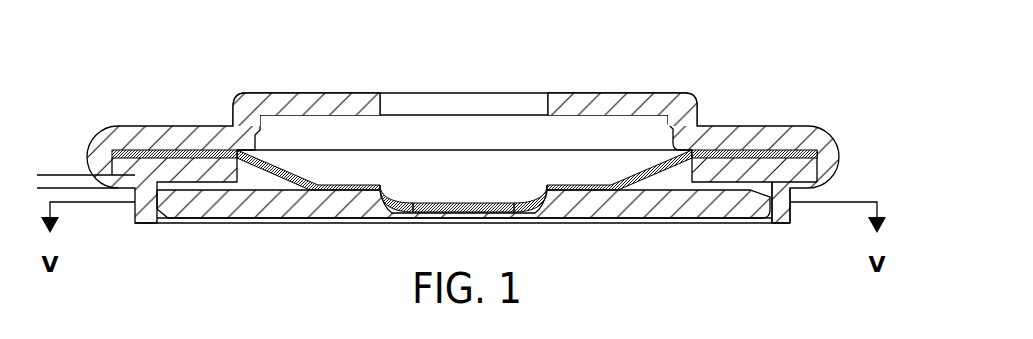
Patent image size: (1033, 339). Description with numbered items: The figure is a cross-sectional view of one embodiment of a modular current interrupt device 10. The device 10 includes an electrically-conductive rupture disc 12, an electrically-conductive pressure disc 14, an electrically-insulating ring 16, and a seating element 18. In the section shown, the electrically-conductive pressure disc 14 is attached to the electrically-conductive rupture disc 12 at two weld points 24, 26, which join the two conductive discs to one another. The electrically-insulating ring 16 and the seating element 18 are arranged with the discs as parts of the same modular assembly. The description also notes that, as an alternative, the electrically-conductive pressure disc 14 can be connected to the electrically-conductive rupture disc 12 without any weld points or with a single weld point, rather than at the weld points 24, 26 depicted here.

The modular current interrupt device 10 is at (165, 68).
The electrically-conductive rupture disc 12 is at (229, 204).
The electrically-conductive pressure disc 14 is at (634, 184).
The electrically-insulating ring 16 is at (777, 213).
The seating element 18 is at (610, 96).
The weld point 24 is at (414, 212).
The weld point 26 is at (513, 212).